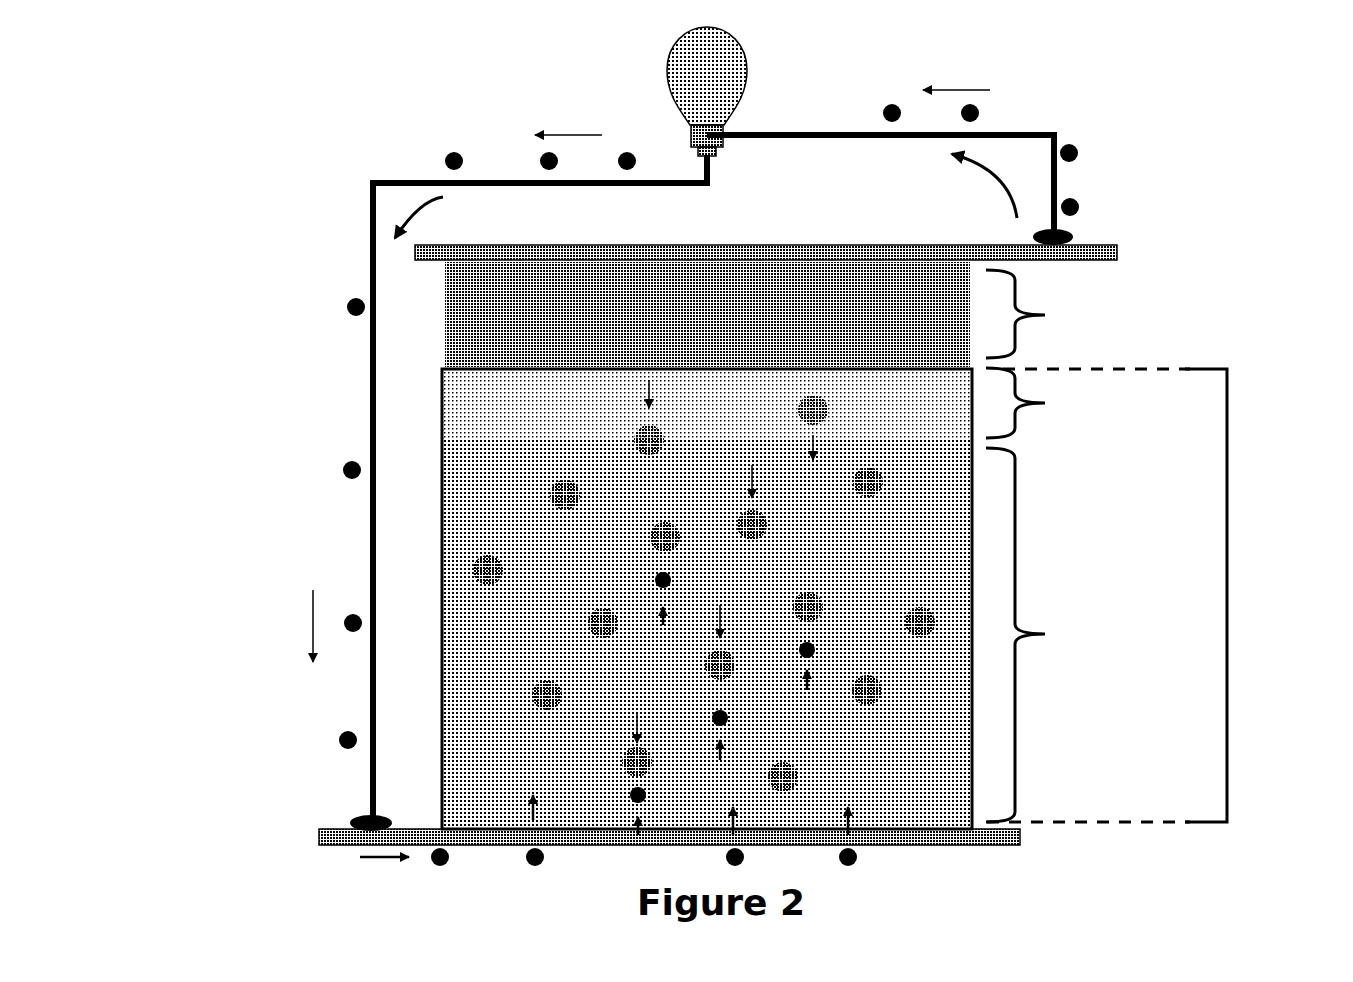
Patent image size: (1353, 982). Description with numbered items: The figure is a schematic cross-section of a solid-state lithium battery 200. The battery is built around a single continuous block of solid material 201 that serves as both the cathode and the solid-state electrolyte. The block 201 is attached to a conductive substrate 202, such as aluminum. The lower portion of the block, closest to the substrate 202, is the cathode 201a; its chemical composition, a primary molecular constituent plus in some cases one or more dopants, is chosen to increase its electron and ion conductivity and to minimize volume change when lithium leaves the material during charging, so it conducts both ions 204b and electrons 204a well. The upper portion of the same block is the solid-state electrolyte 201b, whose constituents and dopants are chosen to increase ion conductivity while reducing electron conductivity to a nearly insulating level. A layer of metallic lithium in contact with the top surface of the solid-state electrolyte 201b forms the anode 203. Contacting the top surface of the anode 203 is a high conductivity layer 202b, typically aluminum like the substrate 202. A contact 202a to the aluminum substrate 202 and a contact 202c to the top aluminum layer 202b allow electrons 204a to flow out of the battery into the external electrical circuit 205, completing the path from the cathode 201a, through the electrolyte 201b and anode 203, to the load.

The solid-state lithium battery 200 is at (630, 463).
The continuous block of solid material 201 is at (1227, 597).
The cathode 201a is at (460, 635).
The solid-state electrolyte 201b is at (473, 427).
The conductive substrate 202 is at (296, 844).
The contact 202a is at (338, 815).
The high conductivity layer 202b is at (1137, 252).
The contact 202c is at (1092, 233).
The anode 203 is at (441, 320).
The electrons 204a is at (1095, 147).
The ions 204b is at (613, 757).
The external electrical circuit 205 is at (765, 95).